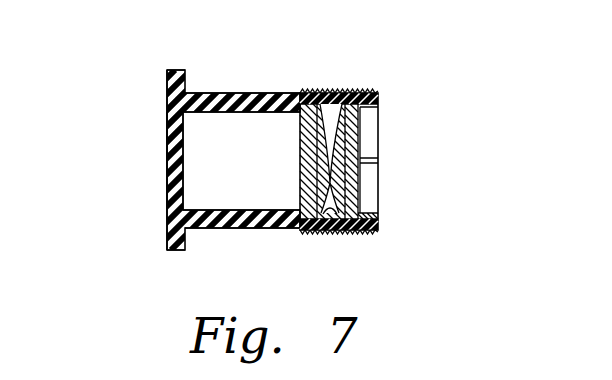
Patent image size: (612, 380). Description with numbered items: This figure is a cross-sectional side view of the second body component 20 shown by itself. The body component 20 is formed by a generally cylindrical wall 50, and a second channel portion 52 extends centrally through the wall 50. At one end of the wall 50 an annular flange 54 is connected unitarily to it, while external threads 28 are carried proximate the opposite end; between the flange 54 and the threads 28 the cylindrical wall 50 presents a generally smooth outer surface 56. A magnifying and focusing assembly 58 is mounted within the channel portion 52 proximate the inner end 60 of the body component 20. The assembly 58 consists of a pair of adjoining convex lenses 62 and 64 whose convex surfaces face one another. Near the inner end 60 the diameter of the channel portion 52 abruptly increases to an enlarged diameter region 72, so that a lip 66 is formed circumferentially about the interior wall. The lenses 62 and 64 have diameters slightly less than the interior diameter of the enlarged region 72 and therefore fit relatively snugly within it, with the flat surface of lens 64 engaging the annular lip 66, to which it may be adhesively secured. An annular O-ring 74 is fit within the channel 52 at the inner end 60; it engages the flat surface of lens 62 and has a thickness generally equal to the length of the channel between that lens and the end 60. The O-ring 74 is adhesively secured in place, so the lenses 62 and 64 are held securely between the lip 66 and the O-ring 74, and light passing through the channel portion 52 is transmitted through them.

The second body component 20 is at (273, 93).
The external threads 28 is at (352, 90).
The cylindrical wall 50 is at (228, 93).
The second channel portion 52 is at (206, 140).
The annular flange 54 is at (167, 226).
The smooth outer surface 56 is at (236, 228).
The magnifying and focusing assembly 58 is at (389, 134).
The inner end 60 is at (378, 213).
The convex lens 62 is at (352, 175).
The convex lens 64 is at (308, 155).
The lip 66 is at (310, 195).
The enlarged diameter region 72 is at (325, 231).
The O-ring 74 is at (378, 108).